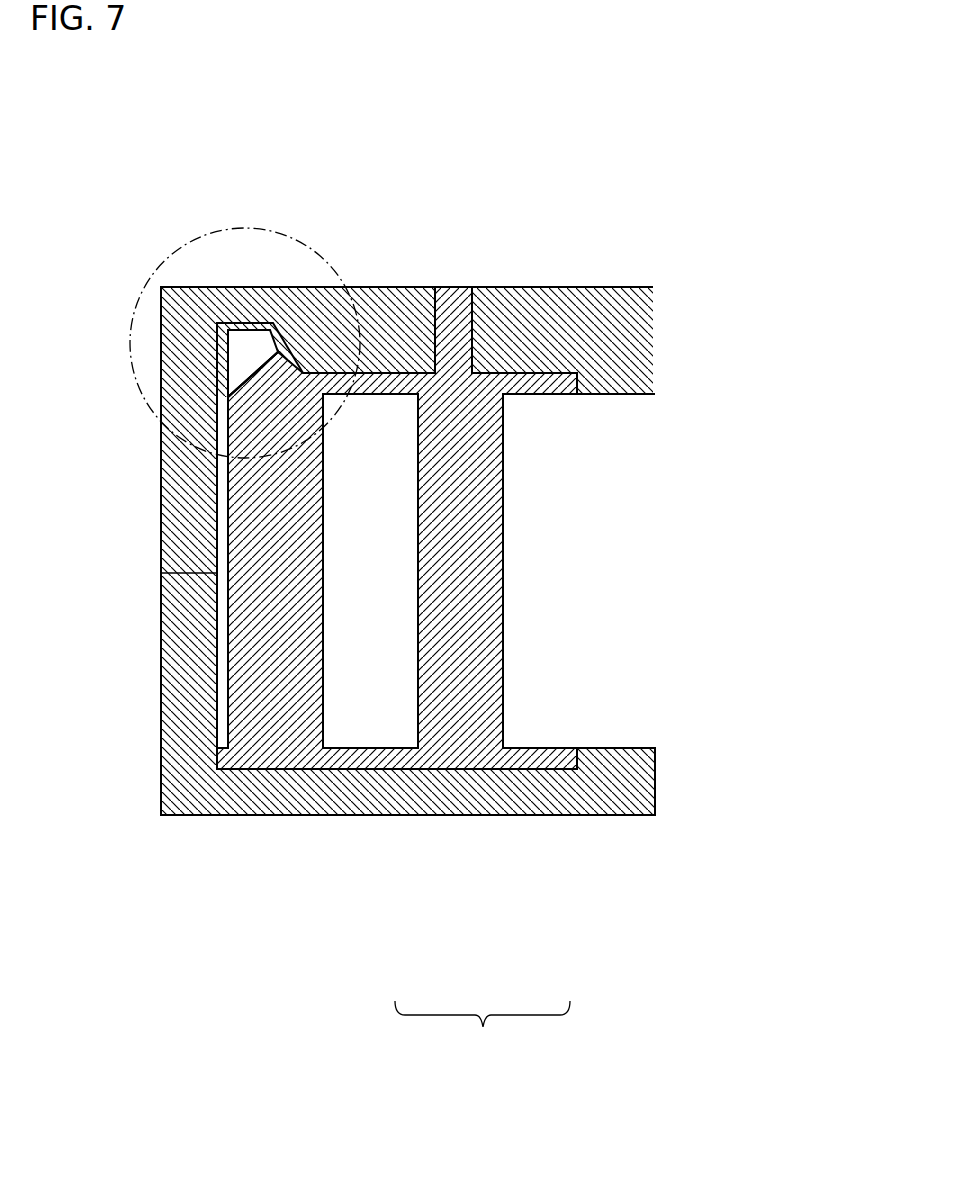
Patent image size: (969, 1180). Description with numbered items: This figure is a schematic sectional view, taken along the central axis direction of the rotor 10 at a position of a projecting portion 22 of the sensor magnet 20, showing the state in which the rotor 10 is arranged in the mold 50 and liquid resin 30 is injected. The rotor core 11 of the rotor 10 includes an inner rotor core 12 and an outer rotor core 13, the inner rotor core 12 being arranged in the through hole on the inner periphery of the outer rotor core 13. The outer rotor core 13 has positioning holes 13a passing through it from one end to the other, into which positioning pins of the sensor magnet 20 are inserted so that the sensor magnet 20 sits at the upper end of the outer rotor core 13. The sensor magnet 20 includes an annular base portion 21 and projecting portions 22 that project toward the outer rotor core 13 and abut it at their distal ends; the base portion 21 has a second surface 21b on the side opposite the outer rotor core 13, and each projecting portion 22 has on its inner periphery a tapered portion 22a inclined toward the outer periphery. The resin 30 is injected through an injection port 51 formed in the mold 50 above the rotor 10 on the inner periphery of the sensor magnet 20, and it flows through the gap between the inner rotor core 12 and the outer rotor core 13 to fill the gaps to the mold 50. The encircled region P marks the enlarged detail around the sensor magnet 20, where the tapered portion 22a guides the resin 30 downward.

The rotor 10 is at (652, 593).
The rotor core 11 is at (482, 1028).
The inner rotor core 12 is at (622, 725).
The outer rotor core 13 is at (218, 735).
The positioning hole 13a is at (268, 693).
The sensor magnet 20 is at (242, 323).
The base portion 21 is at (217, 340).
The second surface 21b is at (250, 323).
The projecting portion 22 is at (228, 380).
The tapered portion 22a is at (268, 402).
The resin 30 is at (482, 443).
The mold 50 is at (190, 513).
The injection port 51 is at (443, 288).
The reference circle P is at (333, 262).